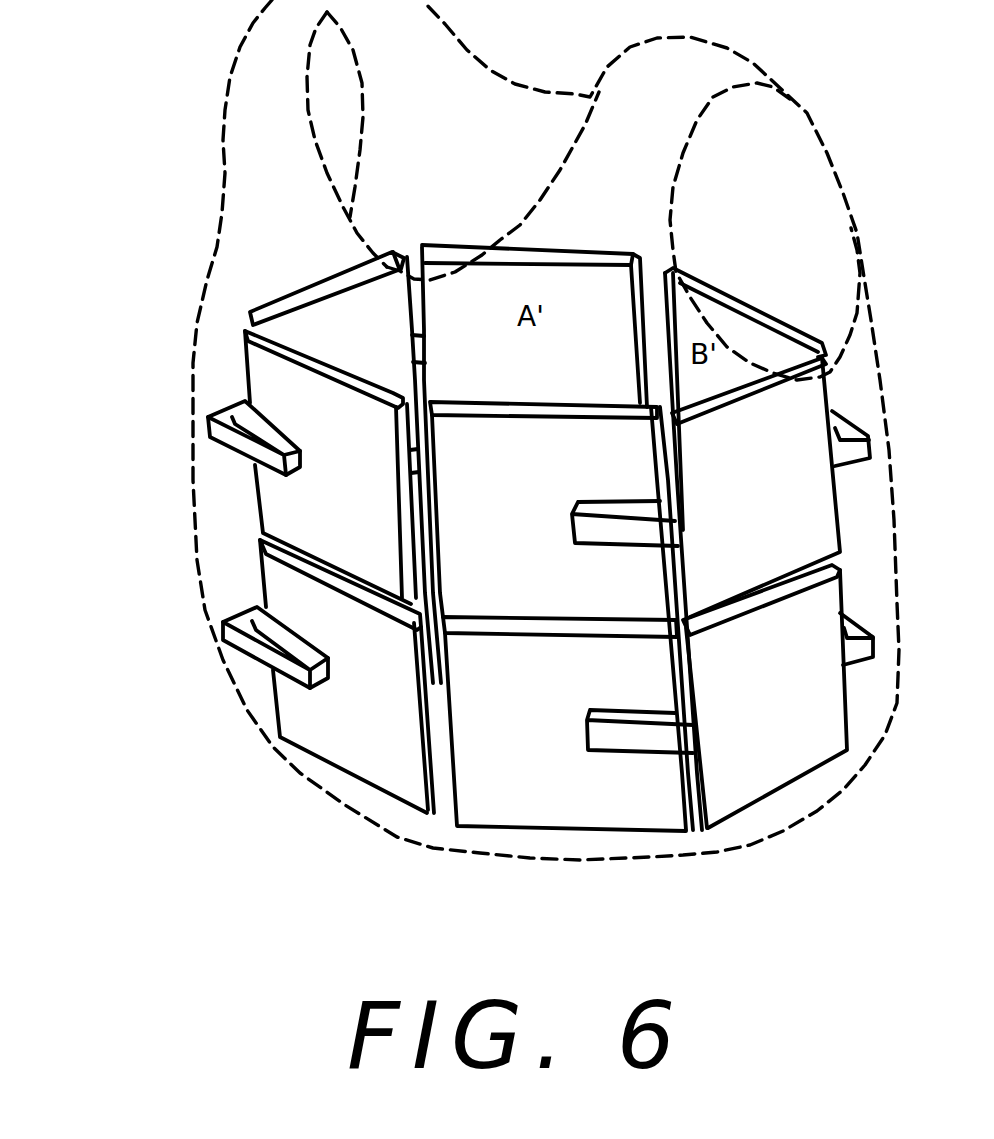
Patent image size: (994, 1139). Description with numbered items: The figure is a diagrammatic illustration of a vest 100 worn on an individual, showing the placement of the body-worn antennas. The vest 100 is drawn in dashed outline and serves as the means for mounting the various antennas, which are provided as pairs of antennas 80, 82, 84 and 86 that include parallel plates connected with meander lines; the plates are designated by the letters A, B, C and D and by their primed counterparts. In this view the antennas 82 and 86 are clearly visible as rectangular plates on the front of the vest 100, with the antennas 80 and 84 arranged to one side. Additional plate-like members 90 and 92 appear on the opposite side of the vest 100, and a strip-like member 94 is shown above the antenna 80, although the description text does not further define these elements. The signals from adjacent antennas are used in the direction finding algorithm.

The vest 100 is at (181, 269).
The support strip 94 is at (378, 346).
The antenna 80 is at (372, 458).
The antenna 82 is at (537, 486).
The antenna 84 is at (397, 669).
The antenna 86 is at (542, 698).
The right upper side panel 90 is at (785, 471).
The right lower side panel 92 is at (795, 689).